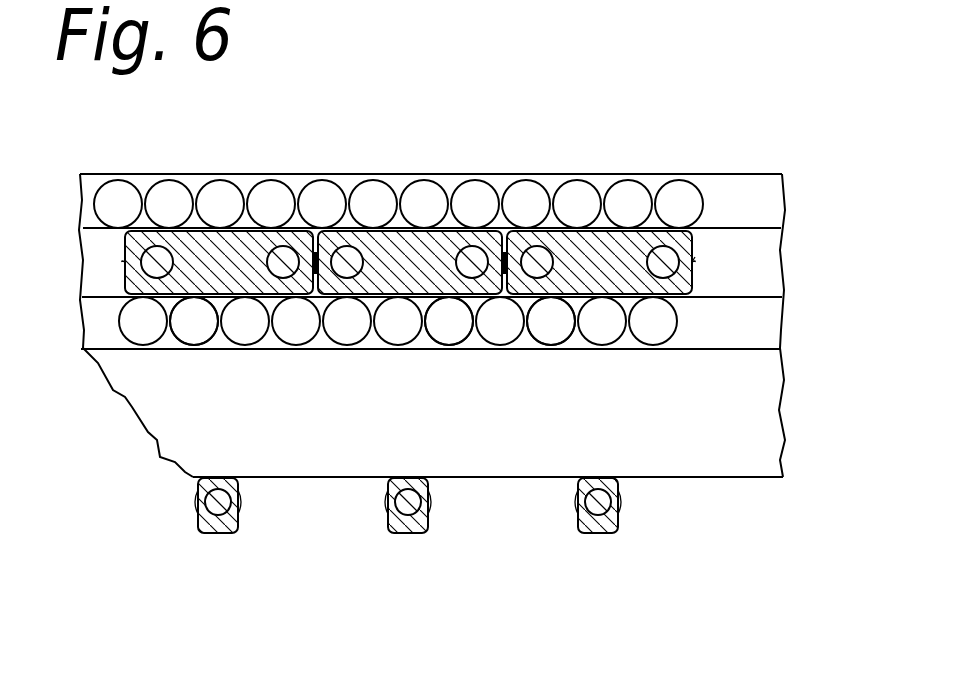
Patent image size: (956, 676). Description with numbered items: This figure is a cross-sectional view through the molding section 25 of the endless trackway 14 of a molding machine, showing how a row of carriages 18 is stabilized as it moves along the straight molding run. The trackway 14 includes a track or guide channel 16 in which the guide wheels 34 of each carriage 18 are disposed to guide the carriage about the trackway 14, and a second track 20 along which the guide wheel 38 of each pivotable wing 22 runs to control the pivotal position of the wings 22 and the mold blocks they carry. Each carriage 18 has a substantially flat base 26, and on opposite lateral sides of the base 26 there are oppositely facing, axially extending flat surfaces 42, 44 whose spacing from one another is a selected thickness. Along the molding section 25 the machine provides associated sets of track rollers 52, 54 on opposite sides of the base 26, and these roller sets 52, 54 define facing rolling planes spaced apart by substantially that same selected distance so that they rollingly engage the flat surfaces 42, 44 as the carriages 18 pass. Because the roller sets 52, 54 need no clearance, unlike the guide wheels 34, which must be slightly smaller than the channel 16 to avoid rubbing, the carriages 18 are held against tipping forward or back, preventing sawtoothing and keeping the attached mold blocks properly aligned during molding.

The trackway 14 is at (790, 391).
The track 16 is at (745, 233).
The carriage 18 is at (584, 240).
The second track 20 is at (717, 478).
The wing 22 is at (230, 520).
The molding section 25 is at (449, 129).
The base 26 is at (135, 273).
The guide wheel 34 is at (695, 257).
The guide wheel 38 is at (240, 500).
The flat surface 42 is at (208, 300).
The flat surface 44 is at (143, 247).
The track roller set 52 is at (343, 332).
The track roller set 54 is at (373, 192).